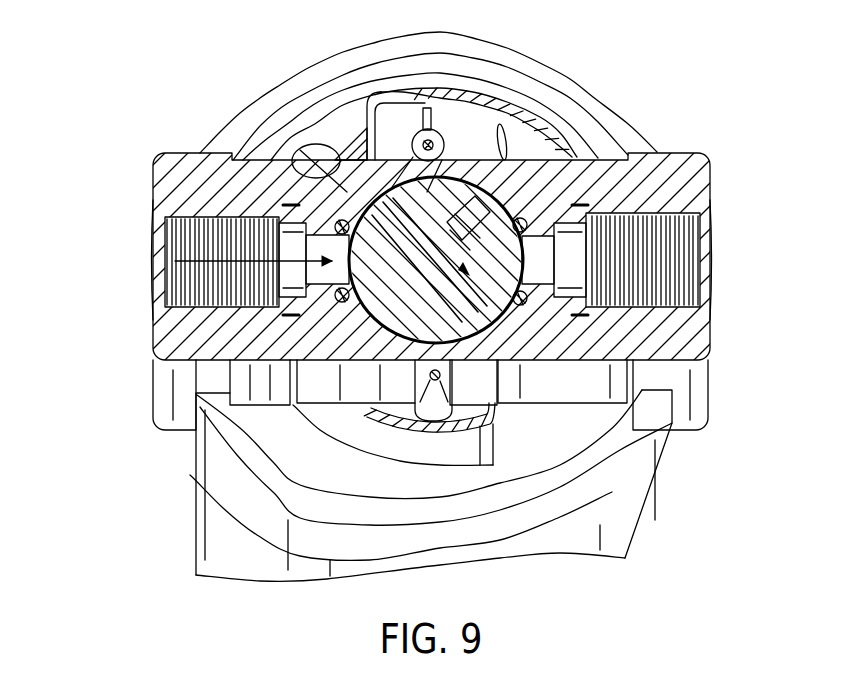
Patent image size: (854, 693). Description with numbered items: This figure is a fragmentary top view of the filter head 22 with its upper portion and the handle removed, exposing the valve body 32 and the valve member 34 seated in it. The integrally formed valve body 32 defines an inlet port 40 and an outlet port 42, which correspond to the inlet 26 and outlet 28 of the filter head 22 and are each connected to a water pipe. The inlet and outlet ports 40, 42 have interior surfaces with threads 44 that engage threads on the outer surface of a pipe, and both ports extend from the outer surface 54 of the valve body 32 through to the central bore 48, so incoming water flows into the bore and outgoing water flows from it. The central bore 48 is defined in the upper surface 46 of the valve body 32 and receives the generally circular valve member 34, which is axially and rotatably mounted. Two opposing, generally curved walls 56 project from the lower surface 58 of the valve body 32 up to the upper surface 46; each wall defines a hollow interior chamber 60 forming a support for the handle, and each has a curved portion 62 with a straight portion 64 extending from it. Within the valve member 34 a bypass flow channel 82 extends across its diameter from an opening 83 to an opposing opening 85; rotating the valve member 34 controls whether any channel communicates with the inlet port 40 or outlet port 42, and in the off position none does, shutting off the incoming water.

The filter head 22 is at (628, 52).
The inlet 26 is at (402, 222).
The outlet 28 is at (643, 210).
The valve body 32 is at (688, 348).
The valve member 34 is at (437, 126).
The inlet port 40 is at (195, 217).
The outlet port 42 is at (660, 213).
The threads 44 is at (193, 288).
The upper surface 46 is at (342, 160).
The central bore 48 is at (436, 185).
The outer surface 54 is at (152, 178).
The curved walls 56 is at (550, 128).
The lower surface 58 is at (555, 442).
The hollow interior chamber 60 is at (460, 102).
The curved portion 62 is at (508, 98).
The straight portion 64 is at (387, 112).
The bypass flow channel 82 is at (507, 215).
The opening 83 is at (306, 152).
The opening 85 is at (568, 362).